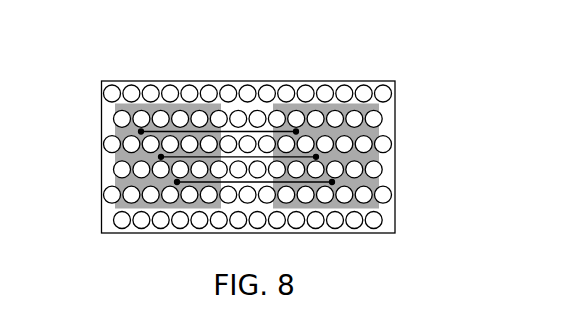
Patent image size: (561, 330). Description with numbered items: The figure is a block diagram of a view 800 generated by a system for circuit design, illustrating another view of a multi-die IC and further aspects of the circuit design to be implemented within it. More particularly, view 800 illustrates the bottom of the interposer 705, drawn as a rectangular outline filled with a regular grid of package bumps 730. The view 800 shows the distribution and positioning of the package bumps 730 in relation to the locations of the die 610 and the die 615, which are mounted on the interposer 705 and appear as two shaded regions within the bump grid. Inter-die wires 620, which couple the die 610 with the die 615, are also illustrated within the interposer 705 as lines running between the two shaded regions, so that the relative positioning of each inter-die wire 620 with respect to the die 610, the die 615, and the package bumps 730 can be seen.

The view 800 is at (238, 42).
The interposer 705 is at (102, 88).
The package bumps 730 is at (327, 82).
The die 615 is at (380, 130).
The die 610 is at (139, 130).
The inter-die wires 620 is at (332, 182).